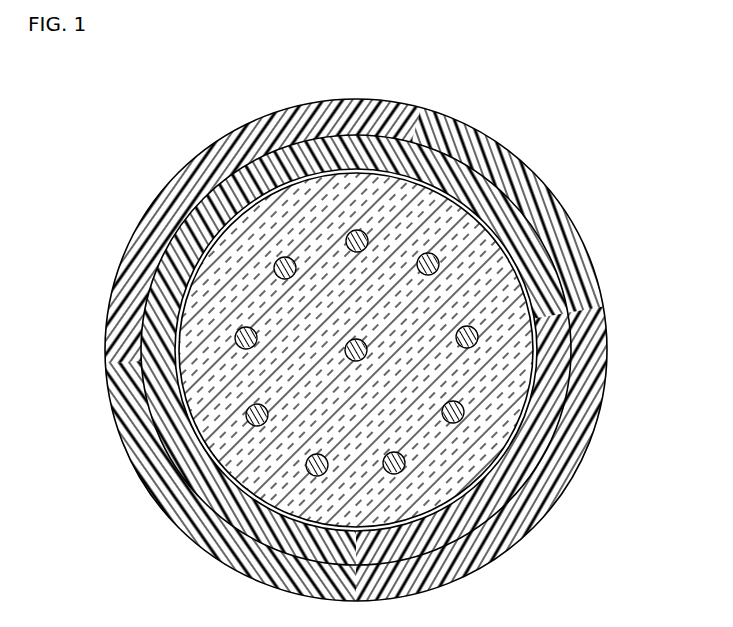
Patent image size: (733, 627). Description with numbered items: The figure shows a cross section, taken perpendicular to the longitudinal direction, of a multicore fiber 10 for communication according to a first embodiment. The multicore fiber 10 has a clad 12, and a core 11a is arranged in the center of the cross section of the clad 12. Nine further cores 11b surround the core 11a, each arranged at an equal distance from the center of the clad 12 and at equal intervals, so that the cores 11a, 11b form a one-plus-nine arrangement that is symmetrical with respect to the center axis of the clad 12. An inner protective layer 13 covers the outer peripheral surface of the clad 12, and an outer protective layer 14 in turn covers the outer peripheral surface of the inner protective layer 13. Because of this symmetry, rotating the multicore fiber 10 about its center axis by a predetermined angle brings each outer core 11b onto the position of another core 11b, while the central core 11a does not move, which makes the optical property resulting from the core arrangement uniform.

The multicore fiber 10 is at (627, 96).
The core 11a is at (347, 344).
The cores 11b is at (277, 260).
The clad 12 is at (530, 214).
The inner protective layer 13 is at (584, 380).
The outer protective layer 14 is at (576, 372).